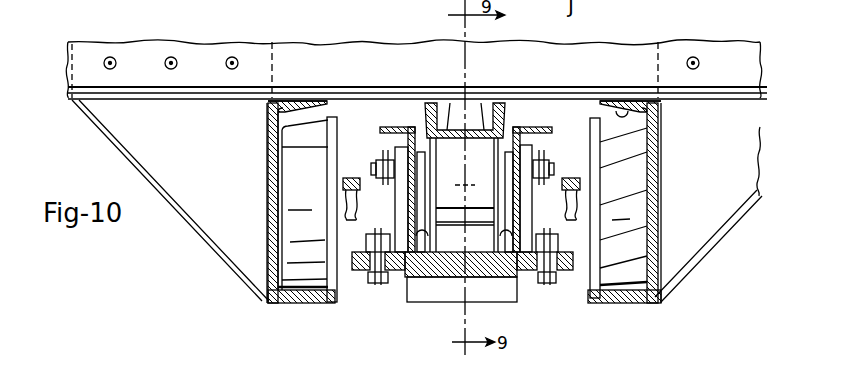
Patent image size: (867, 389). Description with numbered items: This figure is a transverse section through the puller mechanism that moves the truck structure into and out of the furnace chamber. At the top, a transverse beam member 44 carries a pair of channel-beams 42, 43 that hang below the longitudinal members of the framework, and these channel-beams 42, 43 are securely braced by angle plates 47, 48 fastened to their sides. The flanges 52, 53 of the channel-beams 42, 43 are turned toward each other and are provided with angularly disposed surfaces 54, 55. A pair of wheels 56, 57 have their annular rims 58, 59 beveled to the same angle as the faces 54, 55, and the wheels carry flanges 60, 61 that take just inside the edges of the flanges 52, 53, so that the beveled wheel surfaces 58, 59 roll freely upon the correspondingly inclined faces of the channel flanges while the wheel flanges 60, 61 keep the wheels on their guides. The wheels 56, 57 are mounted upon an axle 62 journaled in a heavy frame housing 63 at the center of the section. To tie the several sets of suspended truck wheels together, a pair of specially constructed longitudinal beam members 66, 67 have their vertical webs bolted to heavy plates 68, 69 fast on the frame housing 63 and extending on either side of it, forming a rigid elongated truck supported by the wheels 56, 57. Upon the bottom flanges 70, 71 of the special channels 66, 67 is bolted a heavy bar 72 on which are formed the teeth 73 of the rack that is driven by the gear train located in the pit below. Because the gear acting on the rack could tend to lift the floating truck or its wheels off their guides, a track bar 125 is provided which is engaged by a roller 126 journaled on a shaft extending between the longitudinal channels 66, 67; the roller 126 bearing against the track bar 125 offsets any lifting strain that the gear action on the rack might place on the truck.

The channel-beam 42 is at (600, 150).
The channel-beam 43 is at (268, 133).
The transverse beam member 44 is at (741, 42).
The angle plate 47 is at (733, 230).
The angle plate 48 is at (100, 128).
The flange 52 is at (633, 305).
The flange 53 is at (303, 304).
The angularly disposed surface 54 is at (620, 103).
The angularly disposed surface 55 is at (295, 103).
The wheel 56 is at (600, 148).
The wheel 57 is at (282, 188).
The annular rim 58 is at (625, 262).
The annular rim 59 is at (298, 166).
The wheel flange 60 is at (597, 268).
The wheel flange 61 is at (282, 148).
The axle 62 is at (347, 178).
The frame housing 63 is at (380, 180).
The longitudinal beam member 66 is at (540, 195).
The longitudinal beam member 67 is at (410, 200).
The heavy plate 68 is at (527, 150).
The heavy plate 69 is at (398, 148).
The bottom flange 70 is at (603, 242).
The bottom flange 71 is at (348, 254).
The heavy bar 72 is at (400, 270).
The teeth 73 is at (425, 302).
The track bar 125 is at (485, 108).
The roller 126 is at (447, 157).